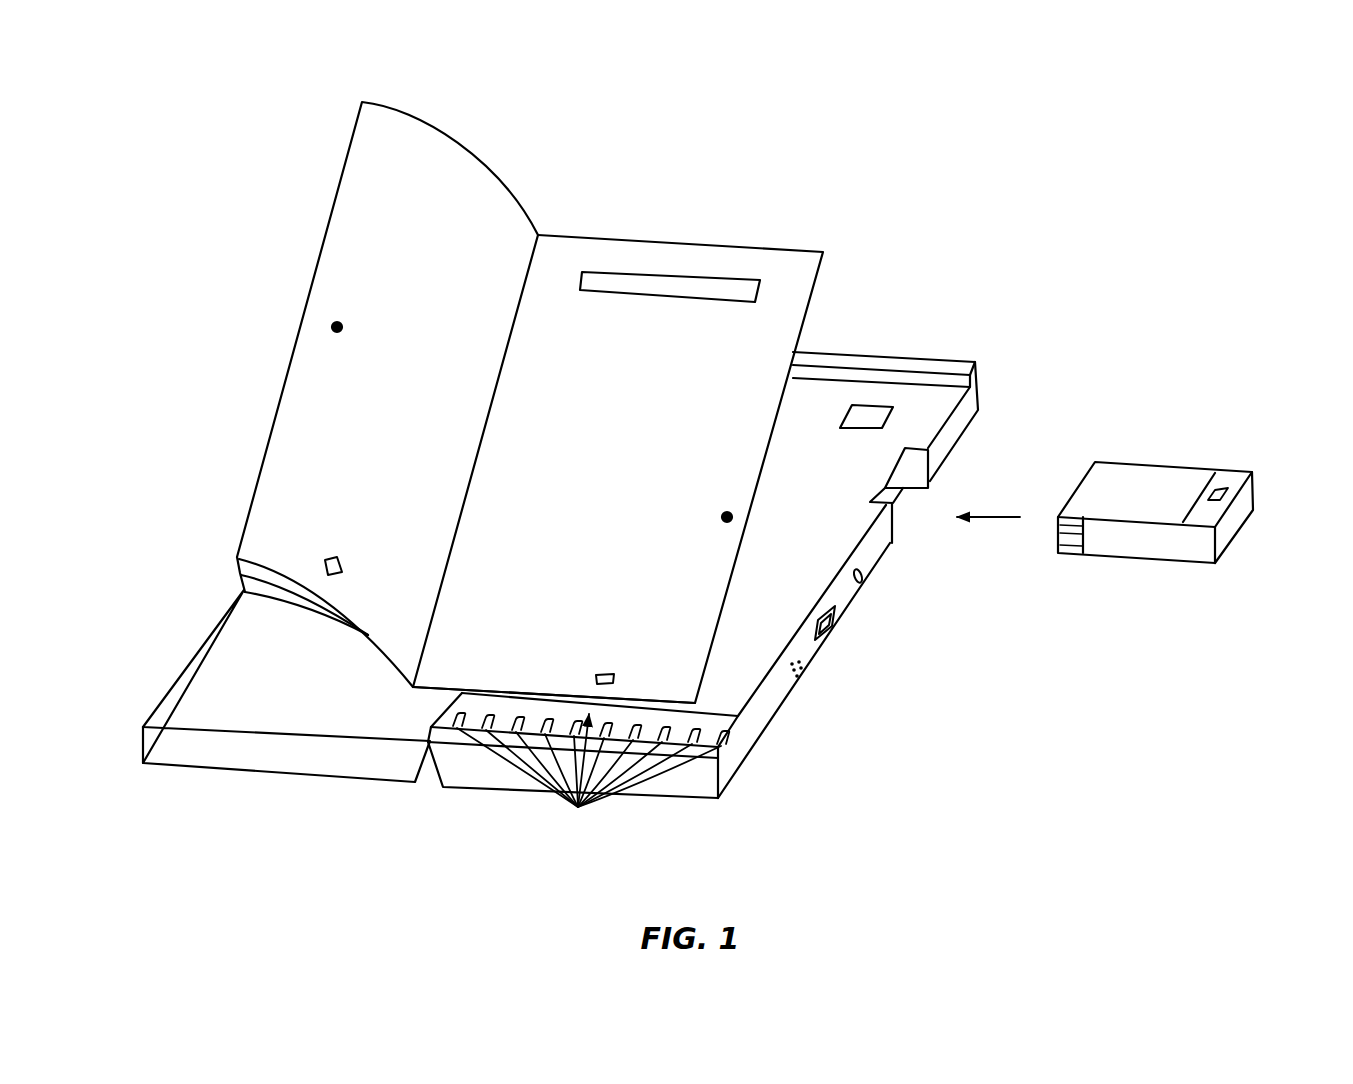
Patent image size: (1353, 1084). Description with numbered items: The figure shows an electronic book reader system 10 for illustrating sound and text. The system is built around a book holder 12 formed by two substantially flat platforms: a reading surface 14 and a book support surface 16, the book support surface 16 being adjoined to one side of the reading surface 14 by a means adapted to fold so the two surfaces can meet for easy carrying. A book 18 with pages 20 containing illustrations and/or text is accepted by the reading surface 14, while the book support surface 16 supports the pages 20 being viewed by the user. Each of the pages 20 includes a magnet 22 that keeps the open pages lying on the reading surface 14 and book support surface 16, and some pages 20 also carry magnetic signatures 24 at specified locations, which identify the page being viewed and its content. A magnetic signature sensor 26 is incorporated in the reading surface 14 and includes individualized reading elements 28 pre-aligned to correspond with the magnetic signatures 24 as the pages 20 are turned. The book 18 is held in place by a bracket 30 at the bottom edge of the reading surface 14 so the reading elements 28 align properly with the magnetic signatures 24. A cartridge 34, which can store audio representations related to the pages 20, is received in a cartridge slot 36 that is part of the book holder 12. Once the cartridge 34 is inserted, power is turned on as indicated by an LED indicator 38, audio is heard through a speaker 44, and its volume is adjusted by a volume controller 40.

The electronic book reader system 10 is at (1077, 129).
The book holder 12 is at (298, 777).
The reading surface 14 is at (806, 568).
The book support surface 16 is at (263, 699).
The book 18 is at (240, 573).
The pages 20 is at (431, 123).
The magnet 22 is at (337, 327).
The magnetic signatures 24 is at (338, 552).
The magnetic signature sensor 26 is at (748, 728).
The reading elements 28 is at (589, 781).
The bracket 30 is at (735, 766).
The cartridge 34 is at (1163, 463).
The cartridge slot 36 is at (947, 462).
The LED indicator 38 is at (883, 584).
The volume controller 40 is at (846, 631).
The speaker 44 is at (812, 672).